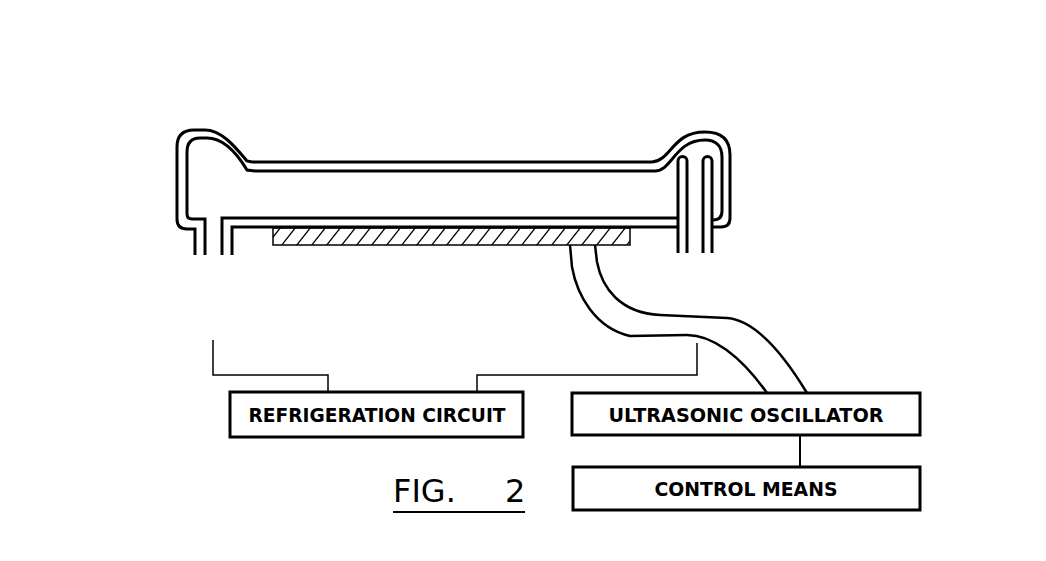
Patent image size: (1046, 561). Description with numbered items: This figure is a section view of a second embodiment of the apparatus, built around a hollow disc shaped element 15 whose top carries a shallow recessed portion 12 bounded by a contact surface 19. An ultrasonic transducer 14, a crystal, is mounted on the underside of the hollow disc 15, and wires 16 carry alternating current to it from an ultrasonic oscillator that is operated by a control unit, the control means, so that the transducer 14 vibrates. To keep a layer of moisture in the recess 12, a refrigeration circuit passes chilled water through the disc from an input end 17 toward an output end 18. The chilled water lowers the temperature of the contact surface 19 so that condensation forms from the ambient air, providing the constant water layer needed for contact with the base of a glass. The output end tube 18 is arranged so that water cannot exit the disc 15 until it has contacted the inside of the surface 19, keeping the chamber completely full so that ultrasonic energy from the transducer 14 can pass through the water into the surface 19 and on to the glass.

The shallow recessed portion 12 is at (494, 142).
The ultrasonic transducer 14 is at (401, 256).
The hollow disc shaped element 15 is at (168, 177).
The wires 16 is at (753, 365).
The input end 17 is at (213, 274).
The output end 18 is at (695, 260).
The contact surface 19 is at (372, 161).